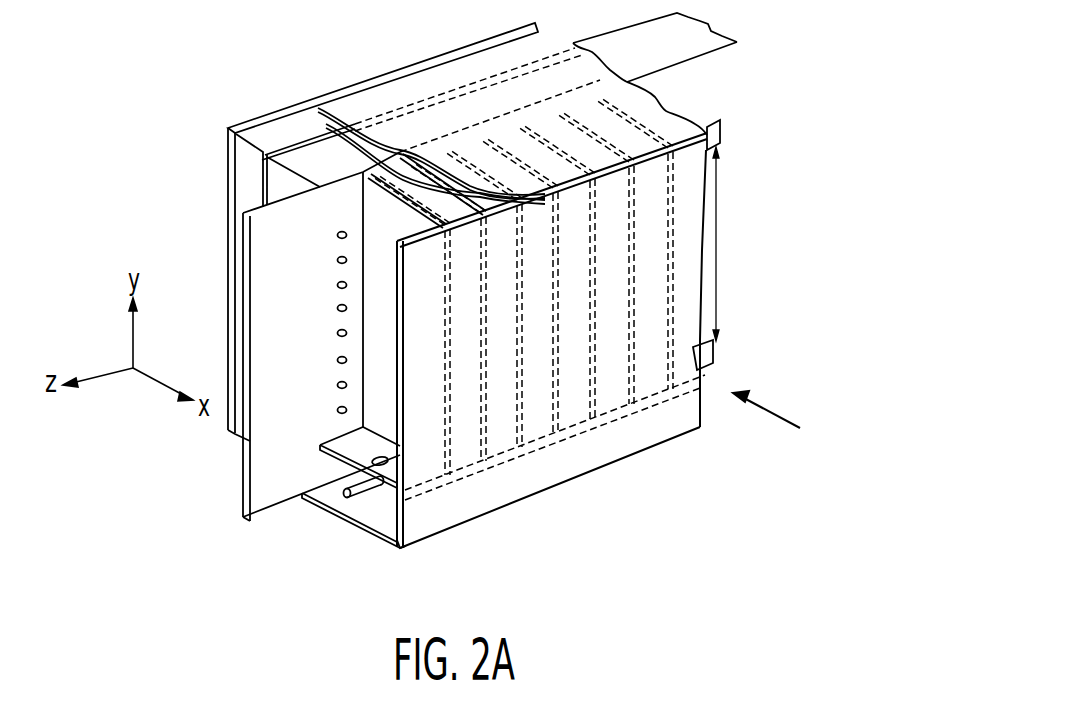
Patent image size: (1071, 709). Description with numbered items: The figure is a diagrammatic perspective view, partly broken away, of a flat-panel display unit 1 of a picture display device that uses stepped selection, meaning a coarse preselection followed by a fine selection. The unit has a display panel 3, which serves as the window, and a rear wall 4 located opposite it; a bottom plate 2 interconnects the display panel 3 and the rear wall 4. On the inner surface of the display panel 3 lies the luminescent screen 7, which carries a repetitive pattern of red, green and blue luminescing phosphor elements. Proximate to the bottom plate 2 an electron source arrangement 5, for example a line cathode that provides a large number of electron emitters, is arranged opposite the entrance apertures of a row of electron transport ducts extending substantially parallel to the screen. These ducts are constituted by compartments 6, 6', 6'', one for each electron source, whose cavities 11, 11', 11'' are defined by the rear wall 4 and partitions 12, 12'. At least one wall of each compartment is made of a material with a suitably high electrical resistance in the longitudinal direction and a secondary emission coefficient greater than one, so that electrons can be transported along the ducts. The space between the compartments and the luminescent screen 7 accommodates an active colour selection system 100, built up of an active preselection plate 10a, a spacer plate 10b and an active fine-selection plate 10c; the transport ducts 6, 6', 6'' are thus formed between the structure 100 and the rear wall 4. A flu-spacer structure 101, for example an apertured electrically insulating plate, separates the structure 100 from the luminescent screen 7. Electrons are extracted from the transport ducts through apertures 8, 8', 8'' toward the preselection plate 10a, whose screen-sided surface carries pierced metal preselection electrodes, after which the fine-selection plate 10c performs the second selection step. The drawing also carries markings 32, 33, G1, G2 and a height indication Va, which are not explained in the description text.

The flat-panel display unit 1 is at (828, 430).
The bottom plate 2 is at (231, 438).
The display panel 3 is at (265, 117).
The rear wall 4 is at (647, 350).
The electron source arrangement 5 is at (363, 507).
The compartment 6 is at (424, 375).
The compartment 6' is at (473, 357).
The compartment 6'' is at (525, 338).
The luminescent screen 7 is at (231, 160).
The aperture 8 is at (313, 249).
The aperture 8' is at (313, 280).
The aperture 8'' is at (312, 311).
The preselection plate 10a is at (607, 64).
The spacer plate 10b is at (594, 52).
The fine-selection plate 10c is at (574, 43).
The cavity 11 is at (421, 300).
The cavity 11' is at (430, 117).
The cavity 11'' is at (435, 111).
The partition 12 is at (407, 226).
The partition 12' is at (443, 229).
The upper flange 32 is at (718, 128).
The lower flange 33 is at (708, 357).
The active colour selection system 100 is at (669, 67).
The flu-spacer structure 101 is at (243, 187).
The guide element G1 is at (388, 500).
The guide element G2 is at (401, 549).
The height dimension Va is at (717, 226).